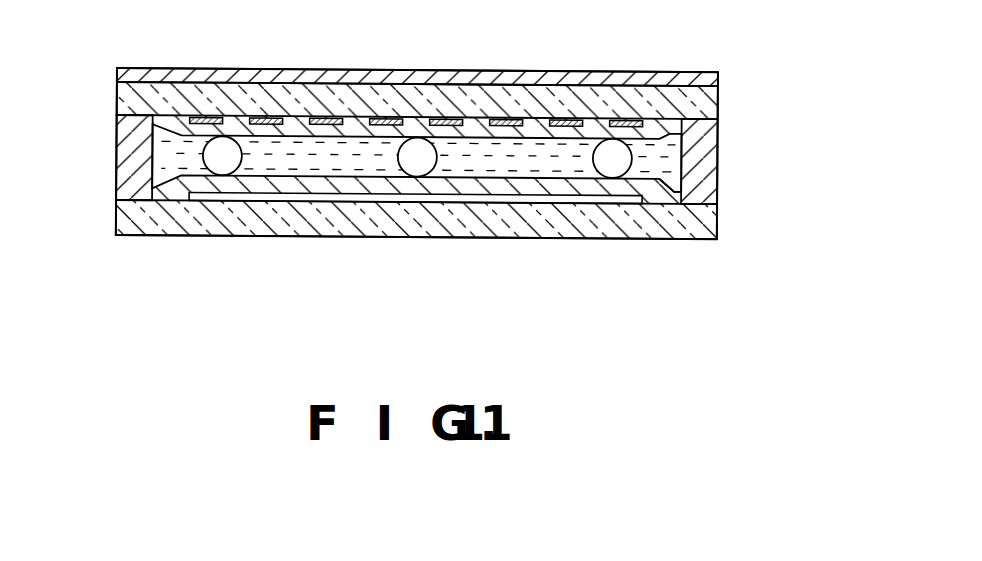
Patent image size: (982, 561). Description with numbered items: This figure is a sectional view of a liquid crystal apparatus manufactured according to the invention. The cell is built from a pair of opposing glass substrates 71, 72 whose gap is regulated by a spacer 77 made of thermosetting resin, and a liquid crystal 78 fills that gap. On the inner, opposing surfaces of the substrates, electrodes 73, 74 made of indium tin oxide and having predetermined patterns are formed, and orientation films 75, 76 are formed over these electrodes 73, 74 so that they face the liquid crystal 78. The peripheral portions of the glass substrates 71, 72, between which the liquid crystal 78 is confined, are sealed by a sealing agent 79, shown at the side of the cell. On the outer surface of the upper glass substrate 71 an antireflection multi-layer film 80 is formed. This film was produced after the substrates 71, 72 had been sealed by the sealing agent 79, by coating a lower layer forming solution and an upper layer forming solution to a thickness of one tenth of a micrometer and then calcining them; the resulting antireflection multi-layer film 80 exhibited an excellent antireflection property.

The glass substrate 71 is at (162, 83).
The glass substrate 72 is at (155, 218).
The electrode 73 is at (338, 116).
The electrode 74 is at (278, 199).
The orientation film 75 is at (542, 121).
The orientation film 76 is at (557, 185).
The spacer 77 is at (214, 160).
The liquid crystal 78 is at (672, 178).
The sealing agent 79 is at (713, 159).
The antireflection multi-layer film 80 is at (667, 68).